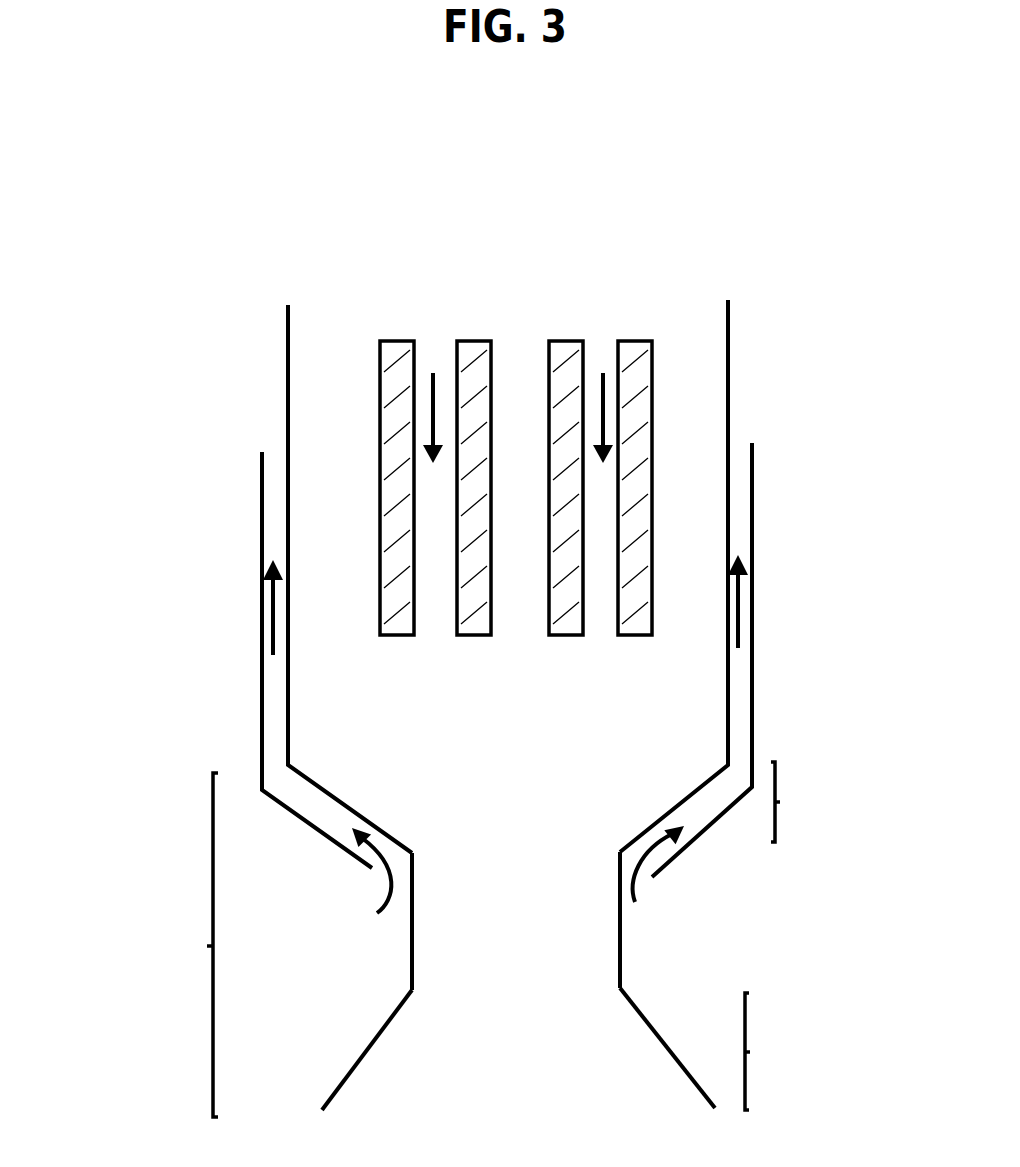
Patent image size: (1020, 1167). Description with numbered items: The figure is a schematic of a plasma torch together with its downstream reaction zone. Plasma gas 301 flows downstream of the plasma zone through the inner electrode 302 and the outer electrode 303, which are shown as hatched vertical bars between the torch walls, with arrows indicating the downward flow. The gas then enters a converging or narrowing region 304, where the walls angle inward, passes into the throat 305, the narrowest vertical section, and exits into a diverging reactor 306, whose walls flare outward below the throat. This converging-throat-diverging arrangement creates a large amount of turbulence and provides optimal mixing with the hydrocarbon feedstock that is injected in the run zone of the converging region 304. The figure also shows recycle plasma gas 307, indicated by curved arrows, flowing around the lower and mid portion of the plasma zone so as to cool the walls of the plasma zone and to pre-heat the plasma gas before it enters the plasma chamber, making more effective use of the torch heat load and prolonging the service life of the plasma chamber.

The plasma gas 301 is at (604, 384).
The inner electrode 302 is at (565, 338).
The outer electrode 303 is at (610, 534).
The converging region 304 is at (473, 708).
The throat 305 is at (627, 943).
The diverging reactor 306 is at (595, 1049).
The recycle plasma gas 307 is at (635, 875).